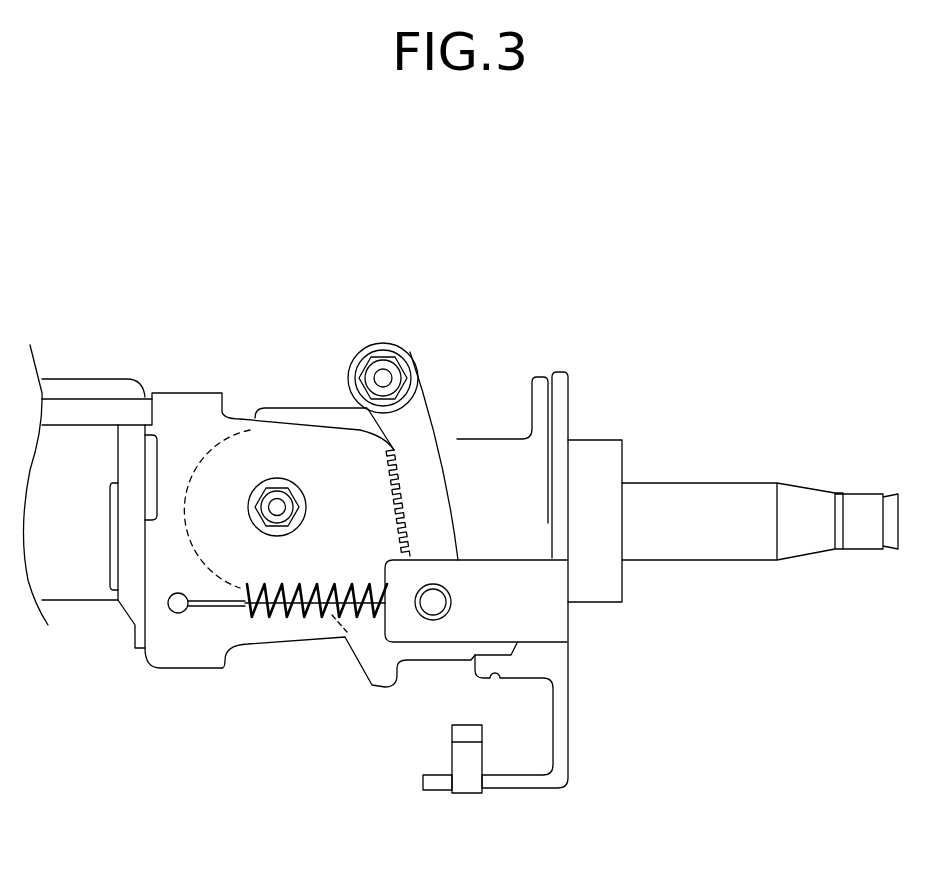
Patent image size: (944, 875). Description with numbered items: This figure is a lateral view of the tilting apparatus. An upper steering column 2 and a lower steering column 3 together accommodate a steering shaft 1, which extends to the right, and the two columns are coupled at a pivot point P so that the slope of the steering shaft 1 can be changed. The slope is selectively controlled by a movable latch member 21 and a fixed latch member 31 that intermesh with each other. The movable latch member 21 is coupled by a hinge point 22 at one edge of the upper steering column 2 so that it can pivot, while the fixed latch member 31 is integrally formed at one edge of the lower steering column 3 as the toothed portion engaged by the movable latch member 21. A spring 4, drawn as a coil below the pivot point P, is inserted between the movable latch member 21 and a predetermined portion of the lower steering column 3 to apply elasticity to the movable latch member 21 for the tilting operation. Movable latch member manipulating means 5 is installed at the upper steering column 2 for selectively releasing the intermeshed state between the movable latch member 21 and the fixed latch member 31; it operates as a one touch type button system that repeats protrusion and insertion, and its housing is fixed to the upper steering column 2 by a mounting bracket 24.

The steering shaft 1 is at (740, 508).
The upper steering column 2 is at (518, 462).
The lower steering column 3 is at (86, 455).
The spring 4 is at (288, 618).
The movable latch member manipulating means 5 is at (433, 608).
The movable latch member 21 is at (412, 413).
The hinge point 22 is at (383, 378).
The mounting bracket 24 is at (528, 610).
The fixed latch member 31 is at (393, 496).
The pivot point P is at (277, 497).